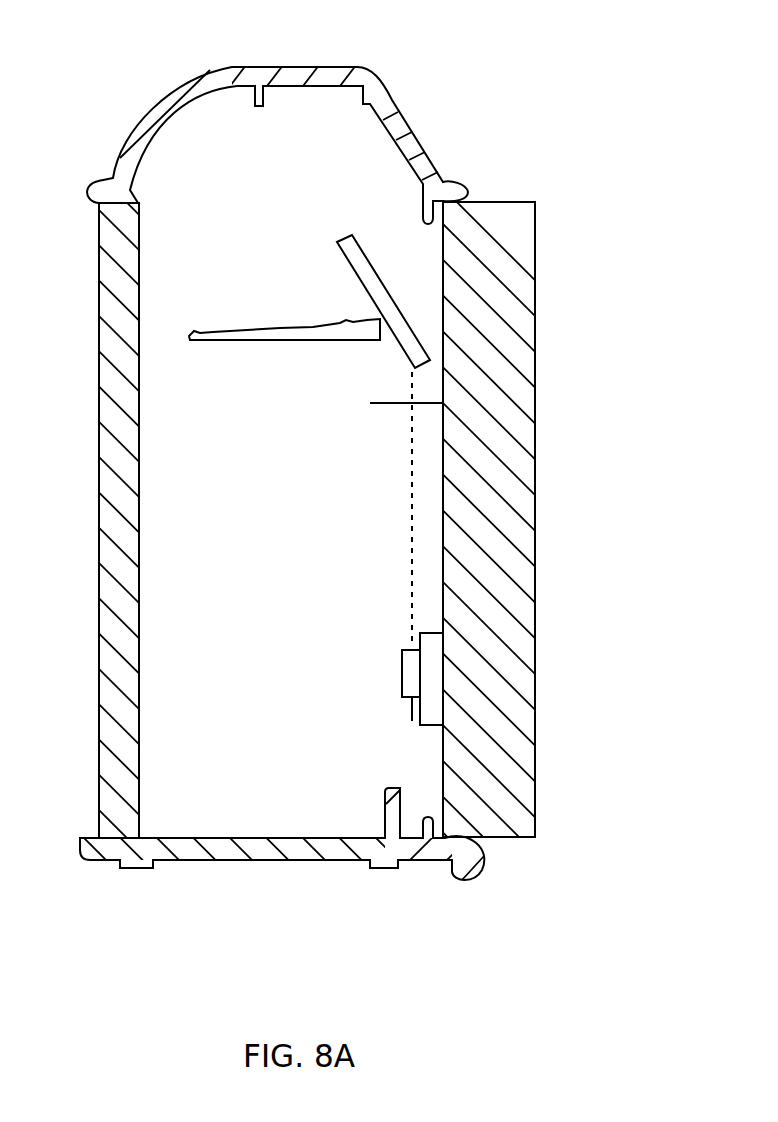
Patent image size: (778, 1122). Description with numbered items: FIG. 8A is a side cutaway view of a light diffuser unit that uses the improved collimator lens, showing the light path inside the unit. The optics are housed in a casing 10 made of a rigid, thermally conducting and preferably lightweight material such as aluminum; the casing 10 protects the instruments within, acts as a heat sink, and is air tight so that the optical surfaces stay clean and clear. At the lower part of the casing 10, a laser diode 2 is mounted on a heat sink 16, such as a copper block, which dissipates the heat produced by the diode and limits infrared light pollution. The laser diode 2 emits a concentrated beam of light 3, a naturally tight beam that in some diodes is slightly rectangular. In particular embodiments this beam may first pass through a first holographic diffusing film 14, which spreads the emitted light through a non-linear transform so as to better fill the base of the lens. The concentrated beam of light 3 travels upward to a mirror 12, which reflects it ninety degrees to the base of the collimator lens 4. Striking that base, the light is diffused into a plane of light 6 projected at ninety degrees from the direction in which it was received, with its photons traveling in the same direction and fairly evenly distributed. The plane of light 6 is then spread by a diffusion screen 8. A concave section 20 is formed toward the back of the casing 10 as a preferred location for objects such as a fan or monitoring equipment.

The laser diode 2 is at (412, 672).
The concentrated beam of light 3 is at (408, 546).
The collimator lens 4 is at (247, 341).
The plane of light 6 is at (157, 607).
The diffusion screen 8 is at (243, 836).
The casing 10 is at (498, 160).
The mirror 12 is at (368, 258).
The first holographic diffusing film 14 is at (430, 389).
The heat sink 16 is at (428, 717).
The concave section 20 is at (230, 110).